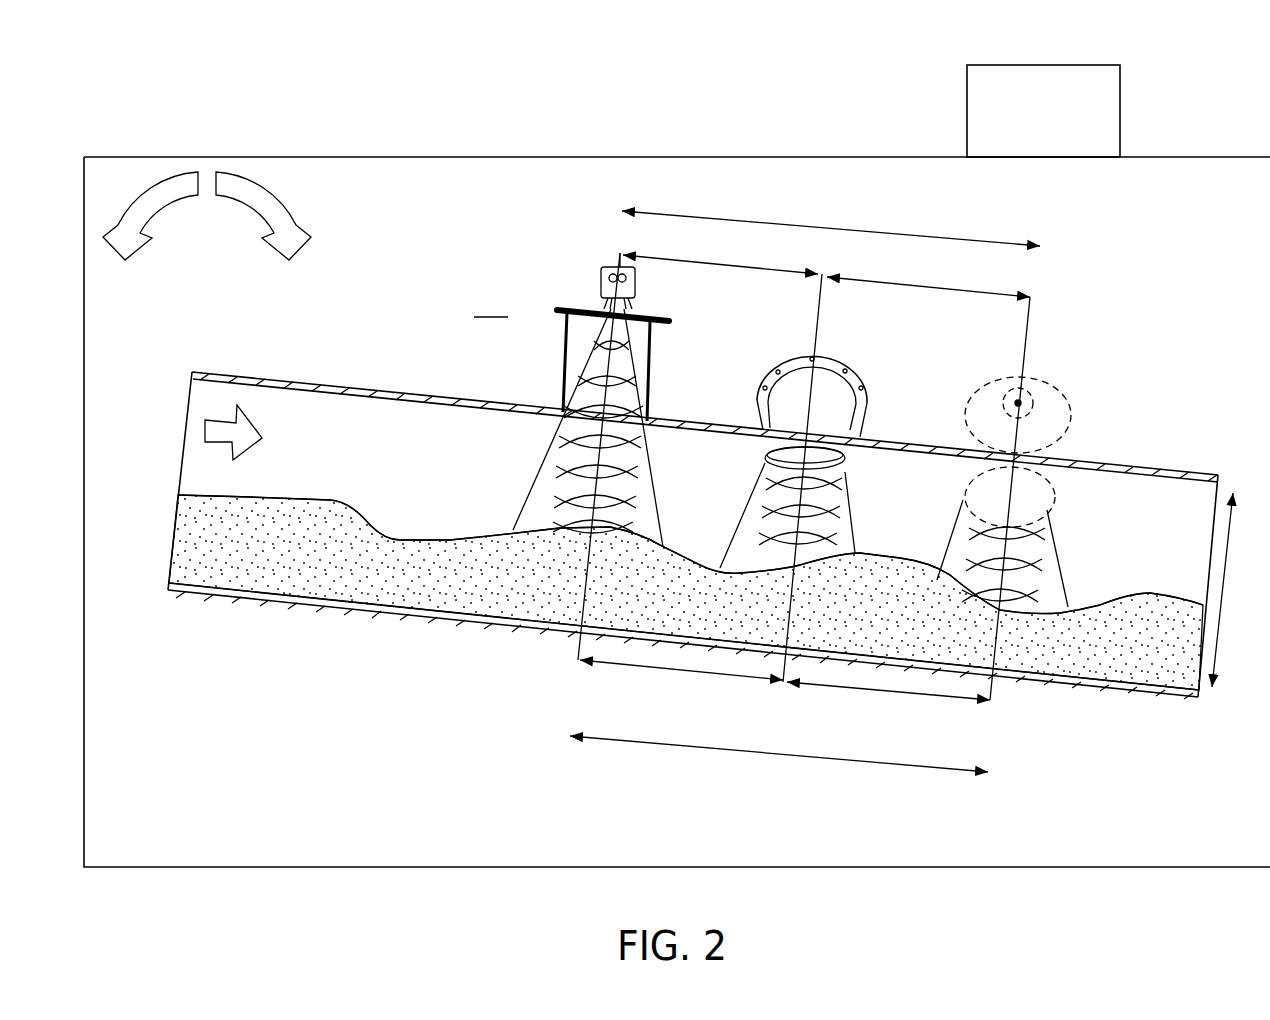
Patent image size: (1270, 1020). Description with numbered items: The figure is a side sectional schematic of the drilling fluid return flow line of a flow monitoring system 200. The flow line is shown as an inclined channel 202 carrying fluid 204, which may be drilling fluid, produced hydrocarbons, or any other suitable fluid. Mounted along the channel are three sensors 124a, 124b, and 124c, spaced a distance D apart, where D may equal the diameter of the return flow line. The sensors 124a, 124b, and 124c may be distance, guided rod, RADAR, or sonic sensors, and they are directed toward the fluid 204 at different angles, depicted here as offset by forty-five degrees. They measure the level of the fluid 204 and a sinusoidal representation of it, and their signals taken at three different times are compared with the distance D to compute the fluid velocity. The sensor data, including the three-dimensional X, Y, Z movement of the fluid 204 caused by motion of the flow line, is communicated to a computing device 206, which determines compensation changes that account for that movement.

The flow monitoring system 200 is at (98, 122).
The trough / conveyor channel 202 is at (350, 622).
The fluid 204 is at (190, 548).
The computing device 206 is at (980, 118).
The sensor 124a is at (578, 316).
The sensor 124b is at (780, 378).
The sensor 124c is at (978, 393).